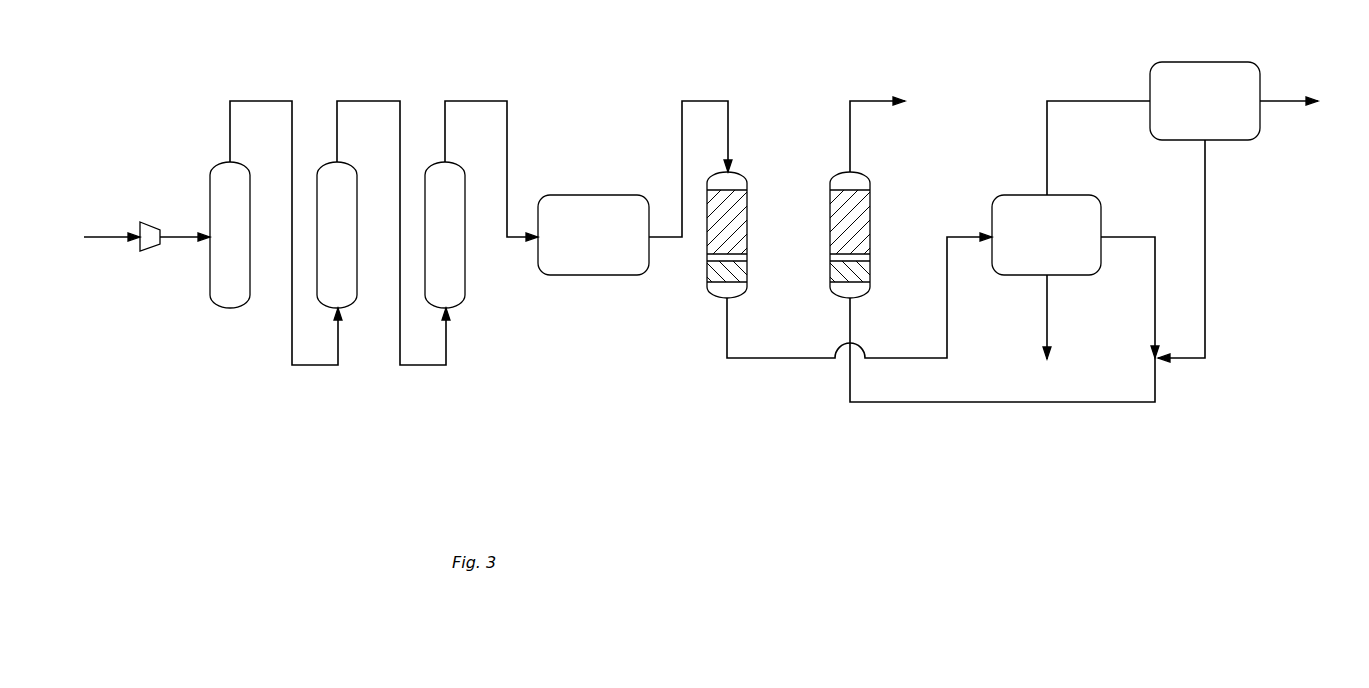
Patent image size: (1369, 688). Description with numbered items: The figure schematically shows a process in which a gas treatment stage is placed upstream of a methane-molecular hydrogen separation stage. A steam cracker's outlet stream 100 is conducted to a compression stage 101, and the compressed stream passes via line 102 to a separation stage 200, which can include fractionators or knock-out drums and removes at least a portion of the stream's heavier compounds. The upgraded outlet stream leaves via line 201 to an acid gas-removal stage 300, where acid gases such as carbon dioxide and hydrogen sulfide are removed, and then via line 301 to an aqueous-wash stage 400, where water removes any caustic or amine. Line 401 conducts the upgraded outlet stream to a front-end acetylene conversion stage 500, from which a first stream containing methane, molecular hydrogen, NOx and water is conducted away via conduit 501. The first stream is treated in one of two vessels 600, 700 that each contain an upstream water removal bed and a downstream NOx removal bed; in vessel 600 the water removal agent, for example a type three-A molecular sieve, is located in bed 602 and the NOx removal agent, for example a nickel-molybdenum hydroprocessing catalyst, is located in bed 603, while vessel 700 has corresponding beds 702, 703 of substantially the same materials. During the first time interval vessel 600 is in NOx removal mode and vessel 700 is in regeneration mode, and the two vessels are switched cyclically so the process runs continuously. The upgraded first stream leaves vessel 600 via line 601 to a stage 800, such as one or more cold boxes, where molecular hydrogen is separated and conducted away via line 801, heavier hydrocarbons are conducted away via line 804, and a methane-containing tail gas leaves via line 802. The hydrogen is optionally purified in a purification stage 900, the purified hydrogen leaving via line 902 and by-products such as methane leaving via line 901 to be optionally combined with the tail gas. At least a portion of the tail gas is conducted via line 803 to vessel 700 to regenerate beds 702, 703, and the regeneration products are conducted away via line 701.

The steam cracker outlet stream 100 is at (106, 233).
The compression stage 101 is at (150, 253).
The line 102 is at (187, 233).
The separation stage 200 is at (246, 163).
The line 201 is at (252, 100).
The acid gas-removal stage 300 is at (355, 163).
The line 301 is at (360, 100).
The aqueous-wash stage 400 is at (462, 163).
The line 401 is at (468, 100).
The front-end acetylene conversion stage 500 is at (588, 195).
The conduit 501 is at (708, 100).
The vessel 600 is at (745, 176).
The line 601 is at (782, 360).
The bed 602 is at (748, 218).
The bed 603 is at (748, 275).
The vessel 700 is at (868, 176).
The line 701 is at (873, 100).
The bed 702 is at (871, 218).
The bed 703 is at (871, 275).
The stage 800 is at (1066, 195).
The line 801 is at (1107, 98).
The line 802 is at (1117, 235).
The line 803 is at (990, 404).
The line 804 is at (1050, 298).
The purification stage 900 is at (1210, 60).
The line 901 is at (1208, 248).
The line 902 is at (1287, 98).